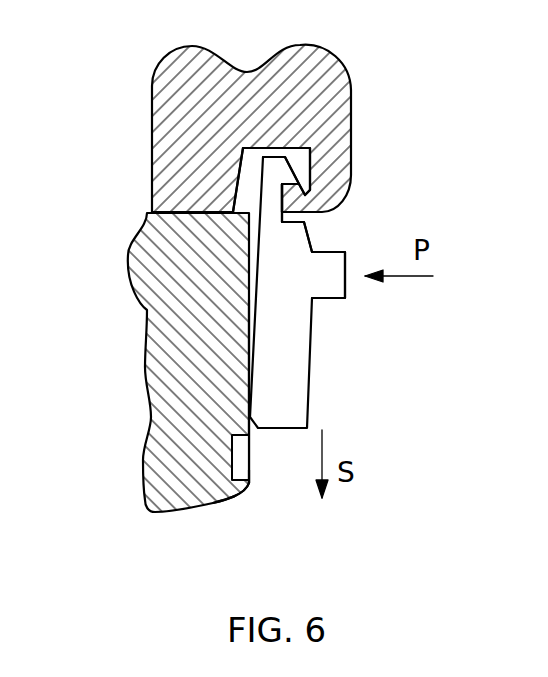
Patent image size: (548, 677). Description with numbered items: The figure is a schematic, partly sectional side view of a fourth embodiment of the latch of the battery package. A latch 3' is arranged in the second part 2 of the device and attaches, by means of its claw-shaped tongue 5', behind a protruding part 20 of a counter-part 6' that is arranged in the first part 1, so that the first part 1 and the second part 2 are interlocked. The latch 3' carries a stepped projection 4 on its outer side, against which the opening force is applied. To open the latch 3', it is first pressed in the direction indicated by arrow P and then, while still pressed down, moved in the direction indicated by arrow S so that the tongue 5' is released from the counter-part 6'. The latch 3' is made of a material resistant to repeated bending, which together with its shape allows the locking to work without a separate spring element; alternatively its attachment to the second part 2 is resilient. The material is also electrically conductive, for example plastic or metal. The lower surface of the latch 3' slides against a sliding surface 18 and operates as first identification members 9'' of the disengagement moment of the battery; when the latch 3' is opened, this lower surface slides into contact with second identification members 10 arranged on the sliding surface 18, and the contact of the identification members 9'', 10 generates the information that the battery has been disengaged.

The first part 1 is at (178, 108).
The second part 2 is at (178, 306).
The latch 3' is at (348, 292).
The projection / step of clip 4 is at (322, 278).
The claw-shaped tongue 5' is at (339, 179).
The counter-part 6' is at (320, 145).
The first identification members 9'' is at (162, 391).
The second identification members 10 is at (242, 457).
The sliding surface 18 is at (255, 475).
The protruding part 20 is at (297, 205).